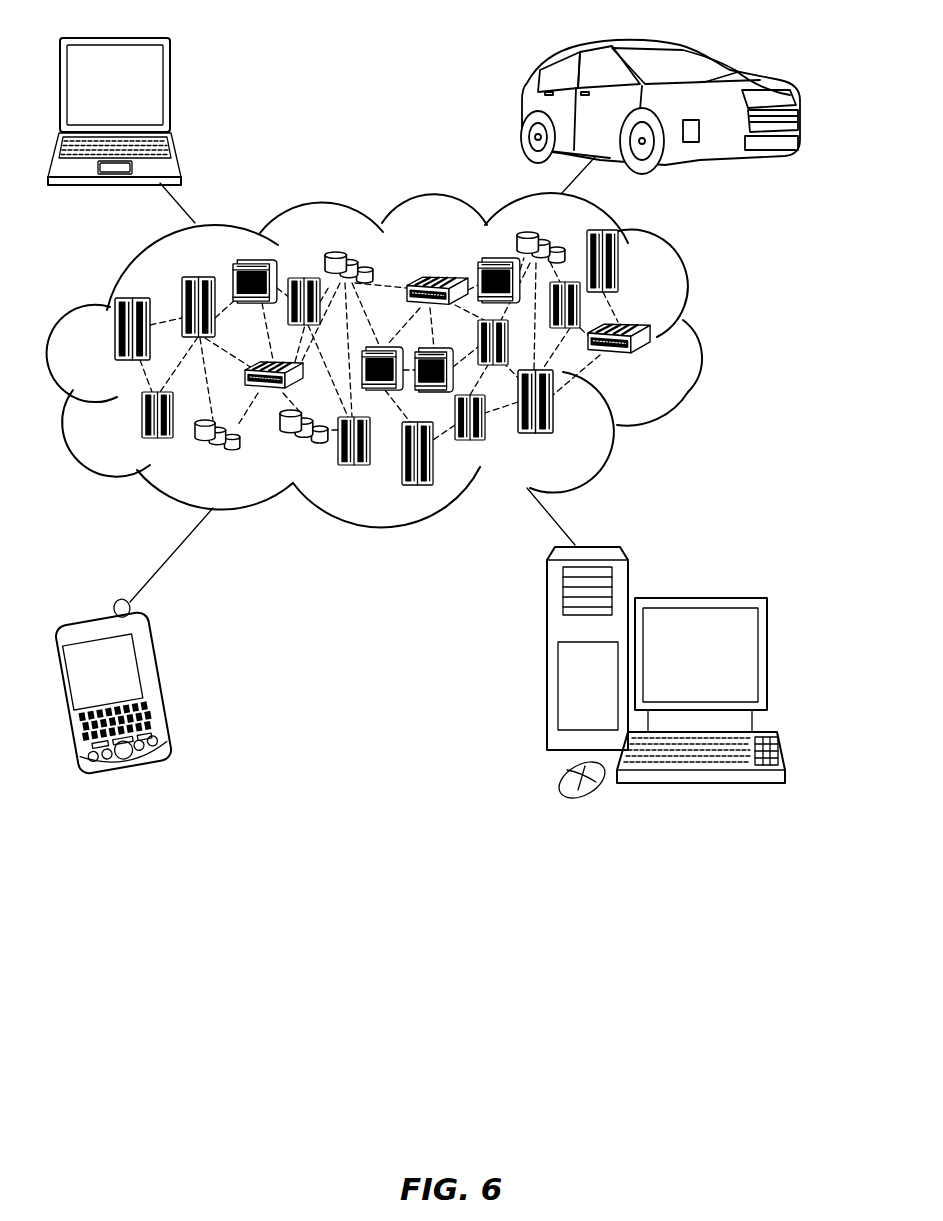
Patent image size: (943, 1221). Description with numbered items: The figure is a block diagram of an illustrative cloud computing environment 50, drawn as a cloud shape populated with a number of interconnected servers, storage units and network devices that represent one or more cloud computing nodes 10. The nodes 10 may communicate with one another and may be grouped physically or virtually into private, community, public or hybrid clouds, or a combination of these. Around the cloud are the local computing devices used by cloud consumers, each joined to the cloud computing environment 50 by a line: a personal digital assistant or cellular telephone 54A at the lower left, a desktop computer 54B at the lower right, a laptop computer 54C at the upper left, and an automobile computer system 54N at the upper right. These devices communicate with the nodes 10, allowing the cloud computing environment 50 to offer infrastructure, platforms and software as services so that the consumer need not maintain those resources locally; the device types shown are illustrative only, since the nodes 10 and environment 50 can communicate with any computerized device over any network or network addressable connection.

The cloud computing nodes 10 is at (650, 370).
The cloud computing environment 50 is at (700, 338).
The personal digital assistant or cellular telephone 54A is at (163, 682).
The desktop computer 54B is at (707, 578).
The laptop computer 54C is at (168, 92).
The automobile computer system 54N is at (520, 108).